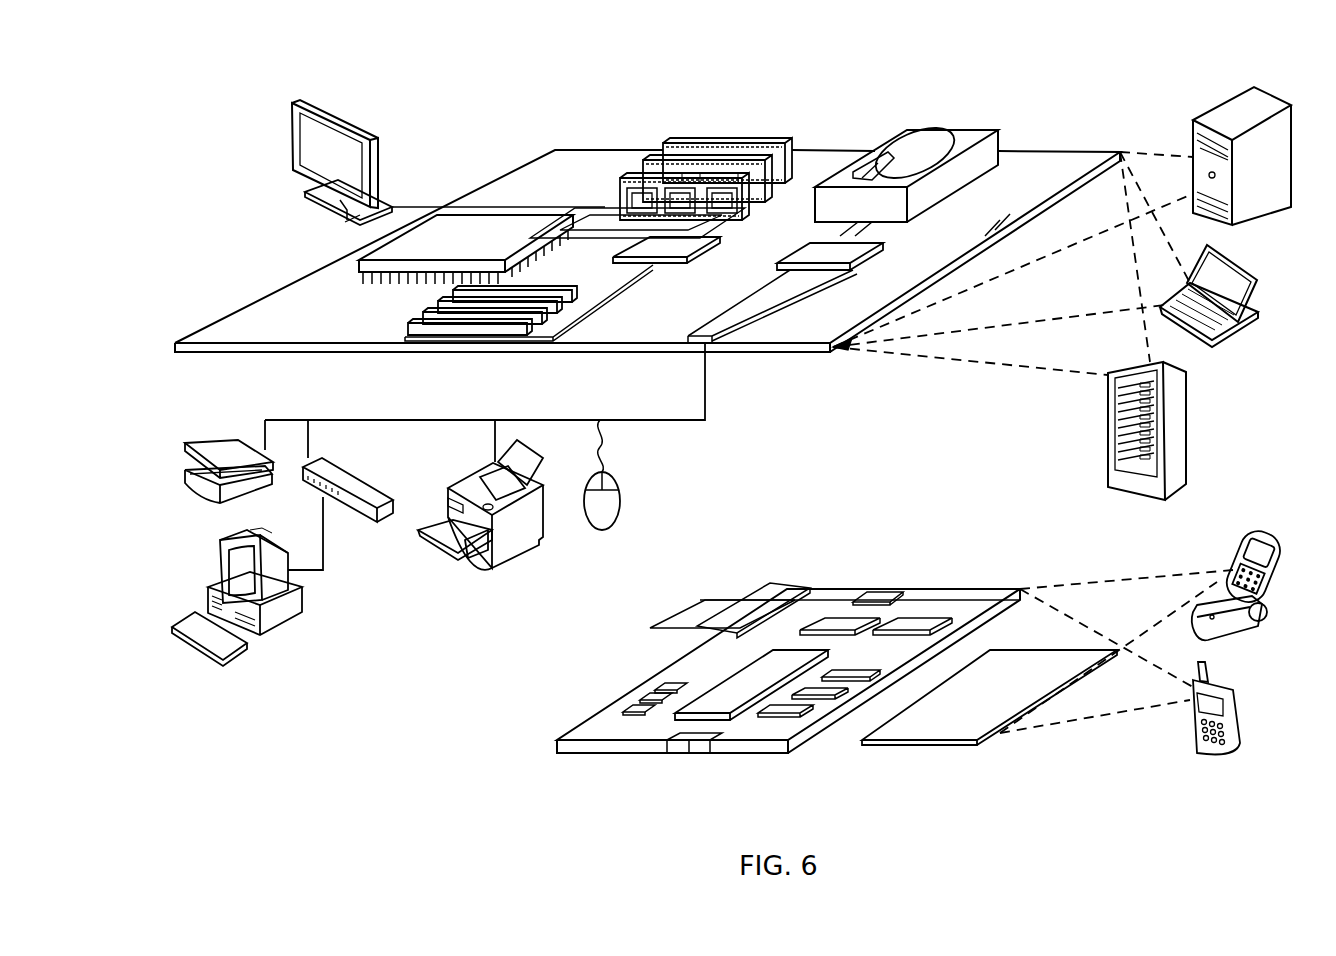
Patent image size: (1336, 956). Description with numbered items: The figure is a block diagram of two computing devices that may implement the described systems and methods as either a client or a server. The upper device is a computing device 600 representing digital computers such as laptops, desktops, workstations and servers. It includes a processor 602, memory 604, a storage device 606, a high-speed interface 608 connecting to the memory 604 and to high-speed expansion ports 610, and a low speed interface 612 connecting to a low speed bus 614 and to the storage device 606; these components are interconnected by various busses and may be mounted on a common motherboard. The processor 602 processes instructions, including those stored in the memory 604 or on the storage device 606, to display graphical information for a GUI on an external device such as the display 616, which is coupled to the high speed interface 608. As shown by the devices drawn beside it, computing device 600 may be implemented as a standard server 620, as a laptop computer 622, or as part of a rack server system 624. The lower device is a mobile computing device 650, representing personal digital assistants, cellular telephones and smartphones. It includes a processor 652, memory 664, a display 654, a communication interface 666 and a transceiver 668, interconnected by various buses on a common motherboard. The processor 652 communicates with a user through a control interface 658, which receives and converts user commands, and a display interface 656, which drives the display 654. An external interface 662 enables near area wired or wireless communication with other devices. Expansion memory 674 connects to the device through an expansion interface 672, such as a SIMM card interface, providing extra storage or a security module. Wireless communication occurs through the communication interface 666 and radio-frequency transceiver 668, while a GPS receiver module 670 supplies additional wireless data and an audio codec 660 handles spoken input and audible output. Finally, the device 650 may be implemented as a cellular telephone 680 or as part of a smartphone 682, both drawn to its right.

The computing device 600 is at (480, 128).
The processor 602 is at (359, 262).
The memory 604 is at (668, 143).
The storage device 606 is at (890, 130).
The high-speed interface 608 is at (643, 247).
The high-speed expansion ports 610 is at (410, 318).
The low speed interface 612 is at (813, 247).
The low speed bus 614 is at (722, 350).
The display 616 is at (295, 103).
The standard server 620 is at (1193, 135).
The laptop computer 622 is at (1262, 276).
The rack server system 624 is at (1108, 458).
The computing device 650 is at (533, 748).
The processor 652 is at (725, 712).
The display 654 is at (950, 727).
The display interface 656 is at (790, 714).
The control interface 658 is at (828, 693).
The audio codec 660 is at (847, 678).
The external interface 662 is at (692, 733).
The memory 664 is at (645, 705).
The communication interface 666 is at (835, 621).
The transceiver 668 is at (915, 622).
The GPS receiver module 670 is at (880, 597).
The expansion interface 672 is at (769, 601).
The expansion memory 674 is at (702, 601).
The cellular telephone 680 is at (1245, 543).
The smartphone 682 is at (1192, 718).